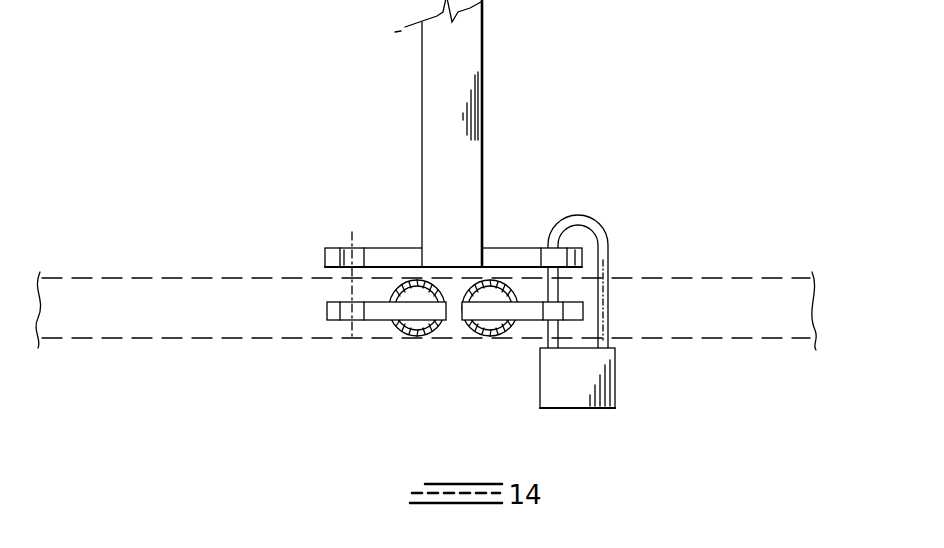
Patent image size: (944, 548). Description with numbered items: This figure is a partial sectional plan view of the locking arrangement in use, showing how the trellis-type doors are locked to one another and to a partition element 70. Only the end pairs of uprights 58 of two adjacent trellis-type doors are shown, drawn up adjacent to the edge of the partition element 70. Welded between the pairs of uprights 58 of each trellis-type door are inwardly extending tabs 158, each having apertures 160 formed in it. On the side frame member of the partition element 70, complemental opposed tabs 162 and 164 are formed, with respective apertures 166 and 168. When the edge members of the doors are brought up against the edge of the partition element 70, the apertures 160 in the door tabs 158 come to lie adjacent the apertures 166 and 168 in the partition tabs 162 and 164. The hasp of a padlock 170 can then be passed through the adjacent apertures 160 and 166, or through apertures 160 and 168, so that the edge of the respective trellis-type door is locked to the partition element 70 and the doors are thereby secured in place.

The partition element 70 is at (482, 56).
The uprights 58 is at (413, 273).
The inwardly extending tabs 158 is at (370, 322).
The apertures 160 is at (350, 325).
The complemental opposed tab 162 is at (324, 258).
The complemental opposed tab 164 is at (580, 262).
The aperture 166 is at (342, 250).
The aperture 168 is at (549, 246).
The padlock 170 is at (616, 402).